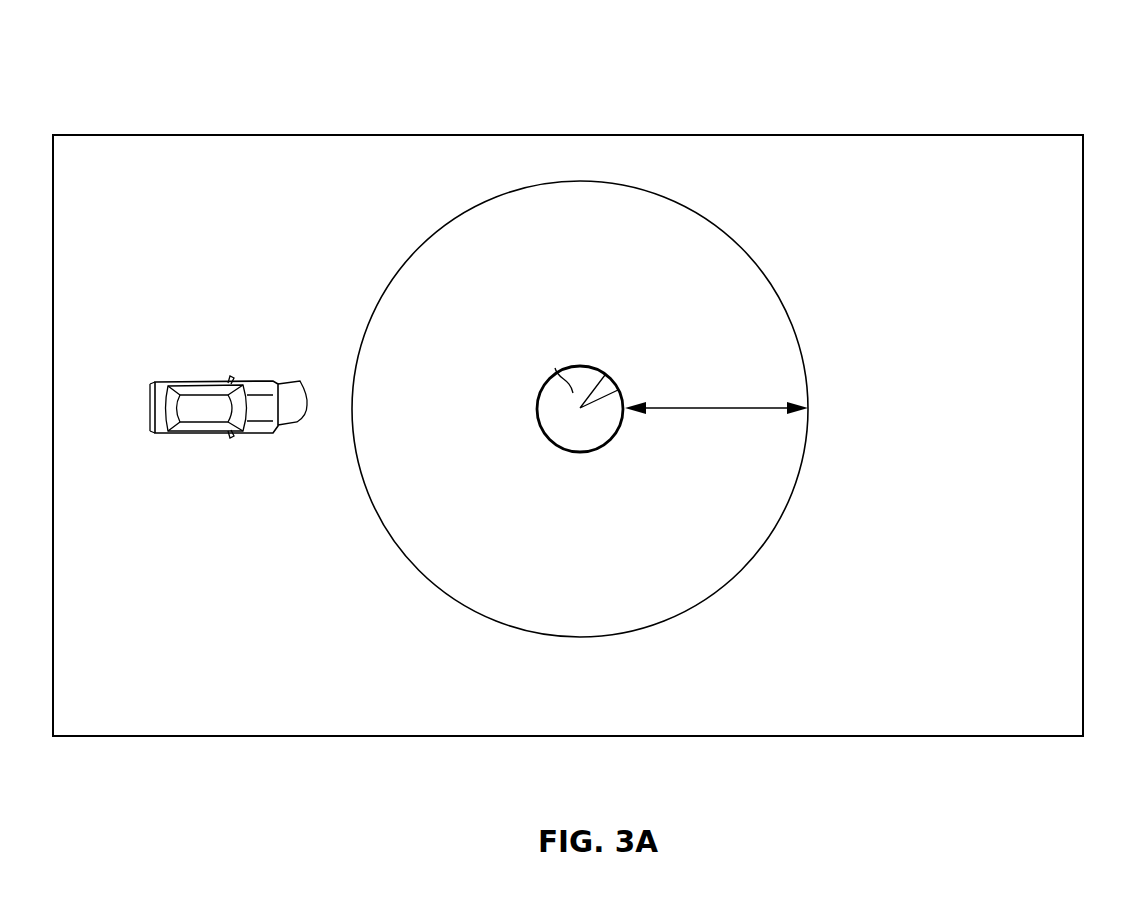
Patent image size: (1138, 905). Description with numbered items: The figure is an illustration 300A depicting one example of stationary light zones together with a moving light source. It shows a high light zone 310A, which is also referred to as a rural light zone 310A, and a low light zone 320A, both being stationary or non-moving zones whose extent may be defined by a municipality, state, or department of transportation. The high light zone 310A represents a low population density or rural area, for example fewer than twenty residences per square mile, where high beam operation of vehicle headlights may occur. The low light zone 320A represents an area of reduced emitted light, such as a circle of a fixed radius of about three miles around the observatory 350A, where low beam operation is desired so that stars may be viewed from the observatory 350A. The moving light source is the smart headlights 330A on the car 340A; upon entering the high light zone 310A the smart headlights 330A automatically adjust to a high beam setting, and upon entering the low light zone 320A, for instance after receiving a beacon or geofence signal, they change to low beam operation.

The environment / scene with observatory and light zones 300A is at (916, 92).
The high light zone 310A is at (838, 652).
The low light zone (3 mile radius) 320A is at (757, 352).
The smart headlights 330A is at (297, 381).
The observatory 340A is at (555, 368).
The car 350A is at (210, 434).